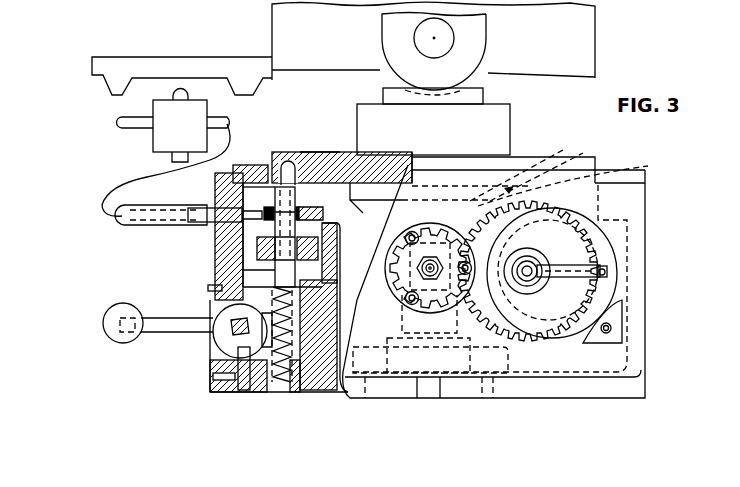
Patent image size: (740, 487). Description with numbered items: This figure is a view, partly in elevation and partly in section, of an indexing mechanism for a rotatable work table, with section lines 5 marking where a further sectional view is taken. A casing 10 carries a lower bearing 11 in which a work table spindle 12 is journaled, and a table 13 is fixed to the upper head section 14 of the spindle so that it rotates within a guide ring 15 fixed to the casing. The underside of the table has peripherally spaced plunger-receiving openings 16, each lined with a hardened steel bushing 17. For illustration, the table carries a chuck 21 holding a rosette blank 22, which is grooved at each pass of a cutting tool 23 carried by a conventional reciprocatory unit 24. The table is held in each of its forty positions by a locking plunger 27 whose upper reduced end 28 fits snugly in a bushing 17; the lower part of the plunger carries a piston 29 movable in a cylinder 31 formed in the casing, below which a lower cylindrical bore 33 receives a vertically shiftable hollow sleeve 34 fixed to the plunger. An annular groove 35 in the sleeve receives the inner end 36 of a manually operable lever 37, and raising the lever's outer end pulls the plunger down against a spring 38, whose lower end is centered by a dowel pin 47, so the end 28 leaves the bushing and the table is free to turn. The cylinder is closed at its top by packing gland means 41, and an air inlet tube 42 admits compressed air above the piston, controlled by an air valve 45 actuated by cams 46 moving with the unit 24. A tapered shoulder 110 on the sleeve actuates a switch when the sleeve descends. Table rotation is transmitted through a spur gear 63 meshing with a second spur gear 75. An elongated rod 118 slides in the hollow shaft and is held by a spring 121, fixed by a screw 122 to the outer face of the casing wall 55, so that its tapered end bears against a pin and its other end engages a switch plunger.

The section line 5- 5 is at (78, 135).
The casing 10 is at (652, 226).
The lower bearing 11 is at (483, 400).
The work table spindle 12 is at (560, 158).
The table 13 is at (358, 155).
The upper head section 14 is at (403, 157).
The guide ring 15 is at (263, 158).
The plunger-receiving openings 16 is at (289, 158).
The bushing 17 is at (305, 153).
The chuck 21 is at (500, 128).
The rosette blank 22 is at (483, 96).
The cutting tool 23 is at (473, 43).
The reciprocatory unit 24 is at (602, 33).
The locking plunger 27 is at (262, 199).
The upper reduced end 28 is at (250, 165).
The piston 29 is at (250, 263).
The cylinder 31 is at (340, 265).
The lower cylindrical bore 33 is at (290, 384).
The hollow sleeve 34 is at (337, 252).
The annular groove 35 is at (220, 293).
The inner end of lever 36 is at (217, 313).
The manually operable lever 37 is at (145, 344).
The spring 38 is at (266, 348).
The packing gland means 41 is at (377, 157).
The air inlet tube 42 is at (122, 219).
The air valve 45 is at (162, 112).
The cam 46 is at (115, 83).
The dowel pin 47 is at (273, 392).
The wall 55 is at (607, 249).
The spur gear 63 is at (605, 186).
The second spur gear 75 is at (530, 157).
The shoulder 110 is at (250, 283).
The elongated rod 118 is at (529, 280).
The spring 121 is at (560, 277).
The screw 122 is at (607, 273).